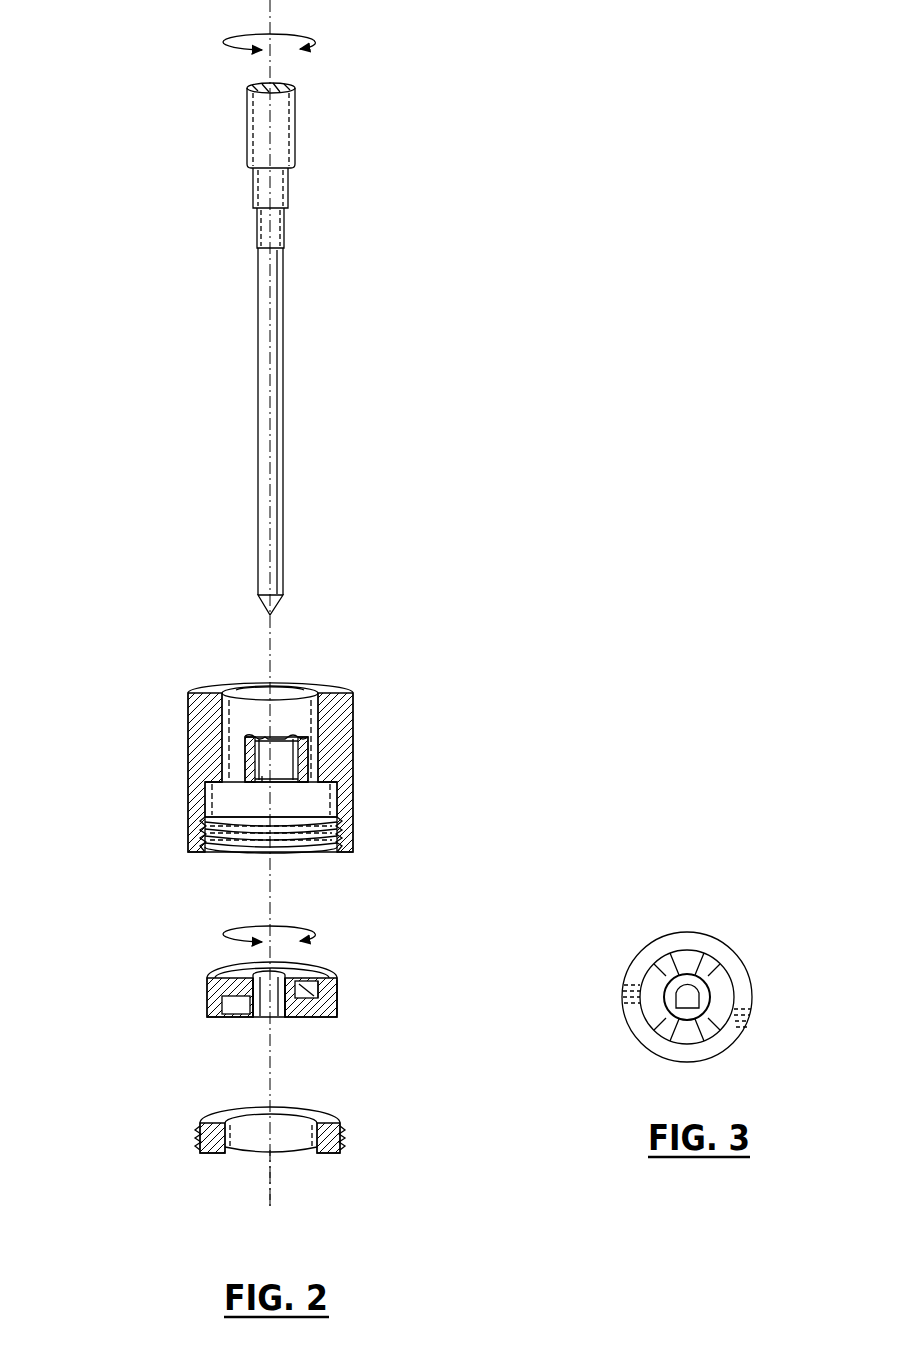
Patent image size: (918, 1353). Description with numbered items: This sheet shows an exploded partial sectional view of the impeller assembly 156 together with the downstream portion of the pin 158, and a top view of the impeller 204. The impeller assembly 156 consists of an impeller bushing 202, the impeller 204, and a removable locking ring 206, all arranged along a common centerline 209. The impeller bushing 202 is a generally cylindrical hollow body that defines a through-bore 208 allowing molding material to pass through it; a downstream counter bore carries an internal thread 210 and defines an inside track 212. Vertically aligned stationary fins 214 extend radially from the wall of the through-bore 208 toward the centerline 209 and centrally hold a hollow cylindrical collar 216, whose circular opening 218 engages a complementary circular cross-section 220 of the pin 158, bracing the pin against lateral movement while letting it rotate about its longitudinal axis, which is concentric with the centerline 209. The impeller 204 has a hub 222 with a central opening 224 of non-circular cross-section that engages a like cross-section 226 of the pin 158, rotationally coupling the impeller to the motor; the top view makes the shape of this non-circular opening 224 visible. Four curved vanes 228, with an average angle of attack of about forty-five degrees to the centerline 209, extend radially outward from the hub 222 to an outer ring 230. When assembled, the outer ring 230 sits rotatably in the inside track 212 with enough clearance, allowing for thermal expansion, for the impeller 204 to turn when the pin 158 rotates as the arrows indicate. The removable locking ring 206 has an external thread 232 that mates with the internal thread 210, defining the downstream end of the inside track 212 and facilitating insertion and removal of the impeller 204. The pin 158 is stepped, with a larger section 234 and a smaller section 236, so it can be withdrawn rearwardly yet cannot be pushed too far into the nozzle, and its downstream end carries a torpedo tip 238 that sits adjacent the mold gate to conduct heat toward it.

In FIG. 2, the impeller assembly 156 is at (154, 671).
In FIG. 2, the pin 158 is at (217, 309).
In FIG. 2, the impeller bushing 202 is at (354, 703).
In FIG. 2, the impeller 204 is at (322, 967).
In FIG. 3, the impeller 204 is at (663, 927).
In FIG. 2, the removable locking ring 206 is at (312, 1114).
In FIG. 2, the through-bore 208 is at (300, 689).
In FIG. 2, the centerline 209 is at (285, 1158).
In FIG. 2, the internal thread 210 is at (300, 846).
In FIG. 2, the inside track 212 is at (324, 799).
In FIG. 2, the stationary fins 214 is at (308, 750).
In FIG. 2, the collar 216 is at (300, 768).
In FIG. 2, the circular opening 218 is at (262, 778).
In FIG. 2, the circular cross-section 220 is at (289, 190).
In FIG. 2, the hub 222 is at (290, 1017).
In FIG. 3, the hub 222 is at (662, 983).
In FIG. 2, the central opening 224 is at (280, 1020).
In FIG. 3, the central opening 224 is at (684, 997).
In FIG. 2, the non-circular cross-section 226 is at (284, 231).
In FIG. 2, the vane 228 is at (338, 980).
In FIG. 3, the vane 228 is at (732, 999).
In FIG. 2, the outer ring 230 is at (338, 1004).
In FIG. 3, the outer ring 230 is at (733, 952).
In FIG. 2, the external thread 232 is at (344, 1135).
In FIG. 2, the larger section 234 is at (296, 126).
In FIG. 2, the smaller section 236 is at (283, 424).
In FIG. 2, the torpedo tip 238 is at (276, 608).